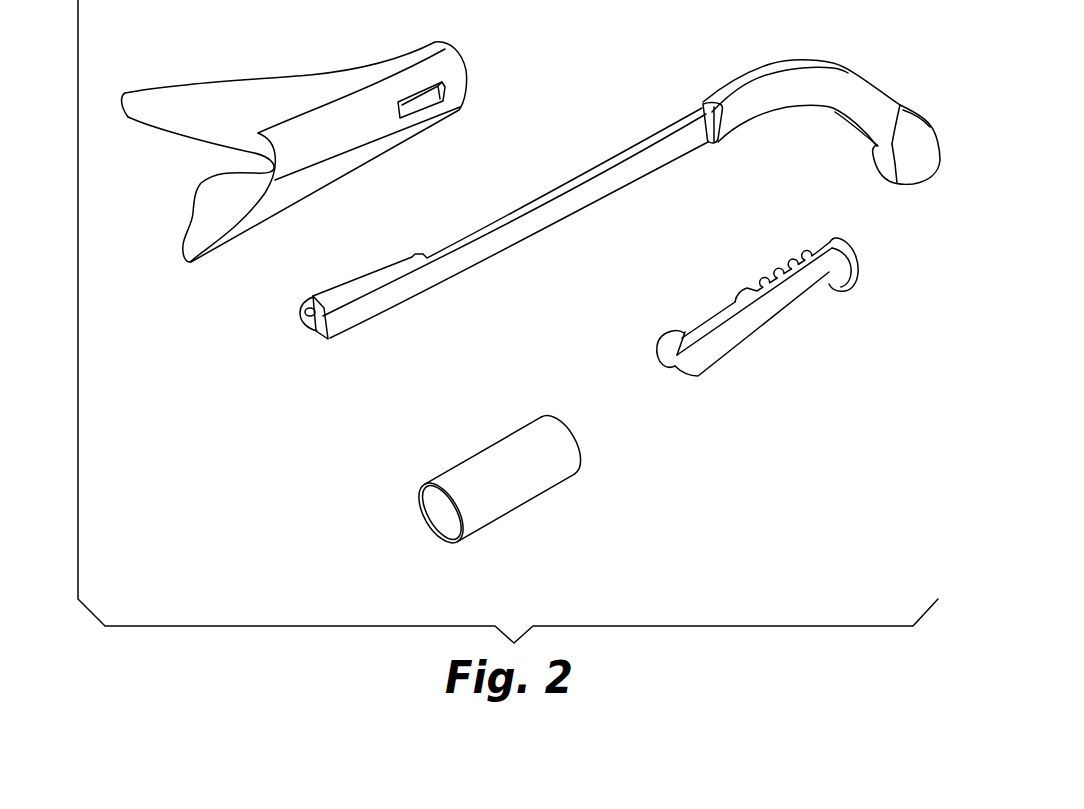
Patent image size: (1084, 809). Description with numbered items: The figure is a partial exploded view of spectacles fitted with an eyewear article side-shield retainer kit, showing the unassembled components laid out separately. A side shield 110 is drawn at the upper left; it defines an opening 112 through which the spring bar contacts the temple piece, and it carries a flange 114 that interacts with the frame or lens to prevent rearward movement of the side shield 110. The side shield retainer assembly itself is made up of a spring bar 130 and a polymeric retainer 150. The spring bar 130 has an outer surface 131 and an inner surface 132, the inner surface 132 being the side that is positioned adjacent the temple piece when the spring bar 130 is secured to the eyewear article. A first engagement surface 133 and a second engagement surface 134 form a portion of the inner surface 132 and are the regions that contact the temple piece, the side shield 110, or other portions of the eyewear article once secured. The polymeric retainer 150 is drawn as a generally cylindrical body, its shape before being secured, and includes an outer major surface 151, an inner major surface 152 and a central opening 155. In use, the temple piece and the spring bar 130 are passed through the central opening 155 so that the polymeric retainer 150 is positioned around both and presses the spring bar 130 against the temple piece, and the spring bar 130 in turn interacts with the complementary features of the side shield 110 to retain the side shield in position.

The side shield 110 is at (328, 134).
The opening 112 is at (433, 92).
The flange 114 is at (137, 108).
The spring bar 130 is at (742, 302).
The outer surface 131 is at (812, 290).
The inner surface 132 is at (738, 293).
The first engagement surface 133 is at (658, 346).
The second engagement surface 134 is at (818, 247).
The polymeric retainer 150 is at (464, 487).
The outer major surface 151 is at (517, 493).
The inner major surface 152 is at (435, 509).
The central opening 155 is at (450, 527).